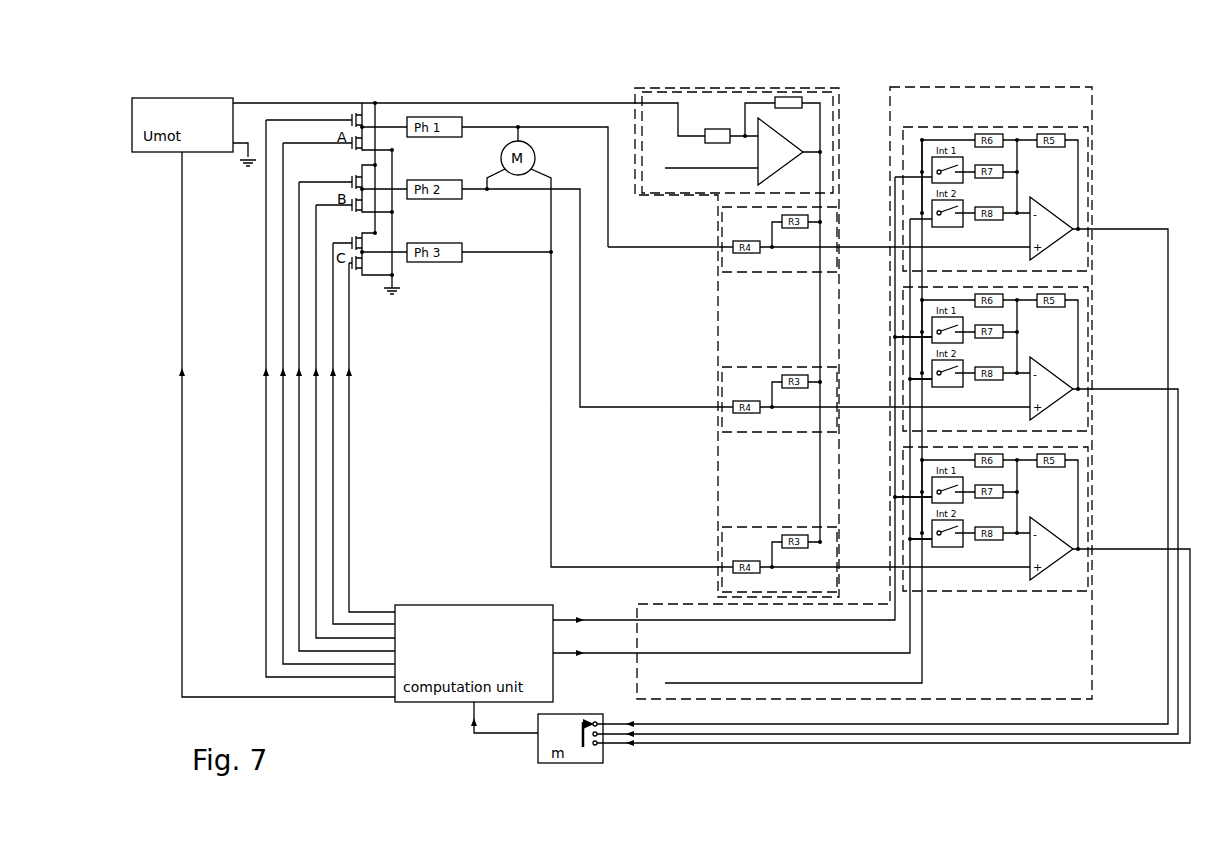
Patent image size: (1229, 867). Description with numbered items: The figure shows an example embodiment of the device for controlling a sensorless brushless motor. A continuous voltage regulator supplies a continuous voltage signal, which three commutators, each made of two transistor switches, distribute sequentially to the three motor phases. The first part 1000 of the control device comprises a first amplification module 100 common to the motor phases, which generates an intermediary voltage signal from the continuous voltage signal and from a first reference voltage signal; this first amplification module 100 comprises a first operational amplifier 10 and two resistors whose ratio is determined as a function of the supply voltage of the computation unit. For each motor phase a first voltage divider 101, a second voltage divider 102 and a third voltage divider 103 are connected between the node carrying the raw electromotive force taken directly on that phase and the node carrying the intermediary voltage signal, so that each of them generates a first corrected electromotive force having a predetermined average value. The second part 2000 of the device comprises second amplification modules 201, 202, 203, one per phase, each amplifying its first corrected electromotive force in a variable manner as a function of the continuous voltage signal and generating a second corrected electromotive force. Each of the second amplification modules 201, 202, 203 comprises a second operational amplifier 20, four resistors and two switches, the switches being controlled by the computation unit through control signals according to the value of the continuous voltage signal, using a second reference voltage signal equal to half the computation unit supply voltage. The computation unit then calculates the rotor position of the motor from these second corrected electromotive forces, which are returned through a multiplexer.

The first amplification module 100 is at (834, 86).
The first part of the control device 1000 is at (778, 86).
The first operational amplifier 10 is at (787, 150).
The first voltage divider 101 is at (717, 221).
The second voltage divider 102 is at (717, 381).
The third voltage divider 103 is at (717, 541).
The second part of the control device 2000 is at (1034, 85).
The second amplification module 201 is at (1095, 146).
The second amplification module 202 is at (1095, 306).
The second amplification module 203 is at (1095, 466).
The second operational amplifier 20 is at (1053, 376).